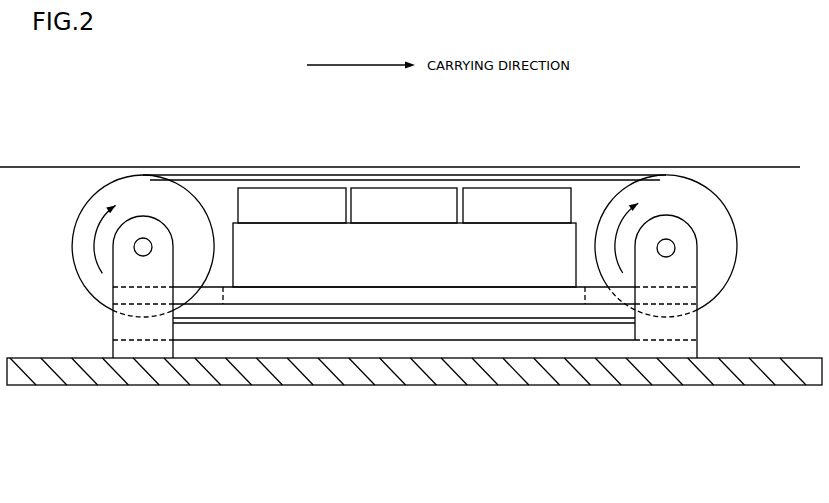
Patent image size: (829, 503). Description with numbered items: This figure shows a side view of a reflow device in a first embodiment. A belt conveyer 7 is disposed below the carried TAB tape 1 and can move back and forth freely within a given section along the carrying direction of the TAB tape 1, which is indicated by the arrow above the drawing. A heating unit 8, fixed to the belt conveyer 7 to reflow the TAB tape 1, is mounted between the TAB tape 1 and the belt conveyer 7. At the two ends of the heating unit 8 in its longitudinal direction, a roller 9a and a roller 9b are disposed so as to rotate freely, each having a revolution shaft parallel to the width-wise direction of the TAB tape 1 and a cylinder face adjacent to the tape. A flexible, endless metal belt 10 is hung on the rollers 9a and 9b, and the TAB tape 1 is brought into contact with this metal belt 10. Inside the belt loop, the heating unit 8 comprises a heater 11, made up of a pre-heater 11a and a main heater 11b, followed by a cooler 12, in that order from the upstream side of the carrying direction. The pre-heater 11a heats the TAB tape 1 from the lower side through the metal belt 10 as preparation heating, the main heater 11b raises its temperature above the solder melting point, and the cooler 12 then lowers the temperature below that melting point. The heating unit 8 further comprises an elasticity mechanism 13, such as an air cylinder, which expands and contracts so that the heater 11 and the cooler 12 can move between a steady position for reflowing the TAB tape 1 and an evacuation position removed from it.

The TAB tape 1 is at (40, 167).
The belt conveyer 7 is at (80, 386).
The heating unit 8 is at (753, 196).
The roller 9a is at (72, 247).
The roller 9b is at (740, 249).
The metal belt 10 is at (583, 177).
The heater 11 is at (347, 159).
The pre-heater 11a is at (327, 195).
The main heater 11b is at (404, 175).
The cooler 12 is at (500, 195).
The elasticity mechanism 13 is at (263, 245).